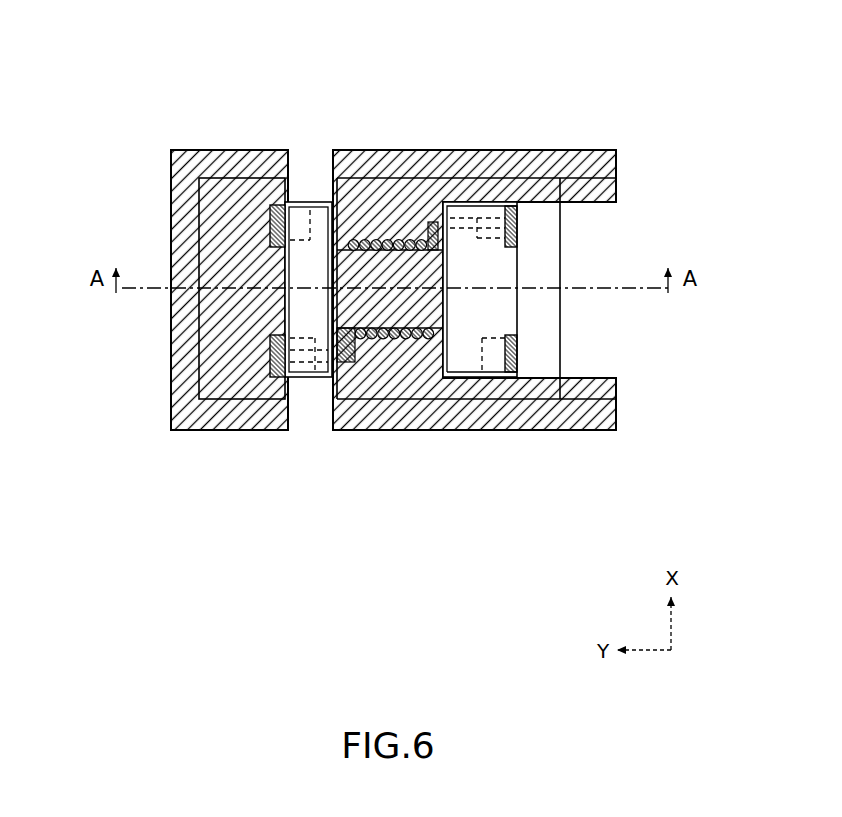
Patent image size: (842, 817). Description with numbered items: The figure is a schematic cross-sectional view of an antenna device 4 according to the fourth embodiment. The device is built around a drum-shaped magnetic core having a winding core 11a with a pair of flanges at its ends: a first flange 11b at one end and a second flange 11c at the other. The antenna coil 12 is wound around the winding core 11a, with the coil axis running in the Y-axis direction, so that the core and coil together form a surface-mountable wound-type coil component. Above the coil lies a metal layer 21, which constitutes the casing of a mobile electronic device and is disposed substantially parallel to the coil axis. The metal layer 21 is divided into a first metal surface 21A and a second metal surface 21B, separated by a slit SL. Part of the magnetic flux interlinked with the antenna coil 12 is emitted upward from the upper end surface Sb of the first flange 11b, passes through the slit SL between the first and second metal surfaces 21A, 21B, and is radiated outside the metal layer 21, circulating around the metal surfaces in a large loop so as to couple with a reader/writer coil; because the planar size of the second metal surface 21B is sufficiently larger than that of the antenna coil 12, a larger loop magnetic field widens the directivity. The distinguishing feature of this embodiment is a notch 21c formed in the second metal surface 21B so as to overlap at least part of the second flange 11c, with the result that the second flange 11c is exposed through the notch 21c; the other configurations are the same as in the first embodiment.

The antenna device 4 is at (386, 53).
The slit SL is at (309, 165).
The winding core 11a is at (398, 268).
The first flange 11b is at (298, 272).
The second flange 11c is at (490, 268).
The antenna coil 12 is at (392, 340).
The upper end surface of the first flange Sb is at (490, 281).
The metal layer 21 is at (393, 371).
The first metal surface 21A is at (288, 512).
The second metal surface 21B is at (616, 512).
The notch 21c is at (592, 350).